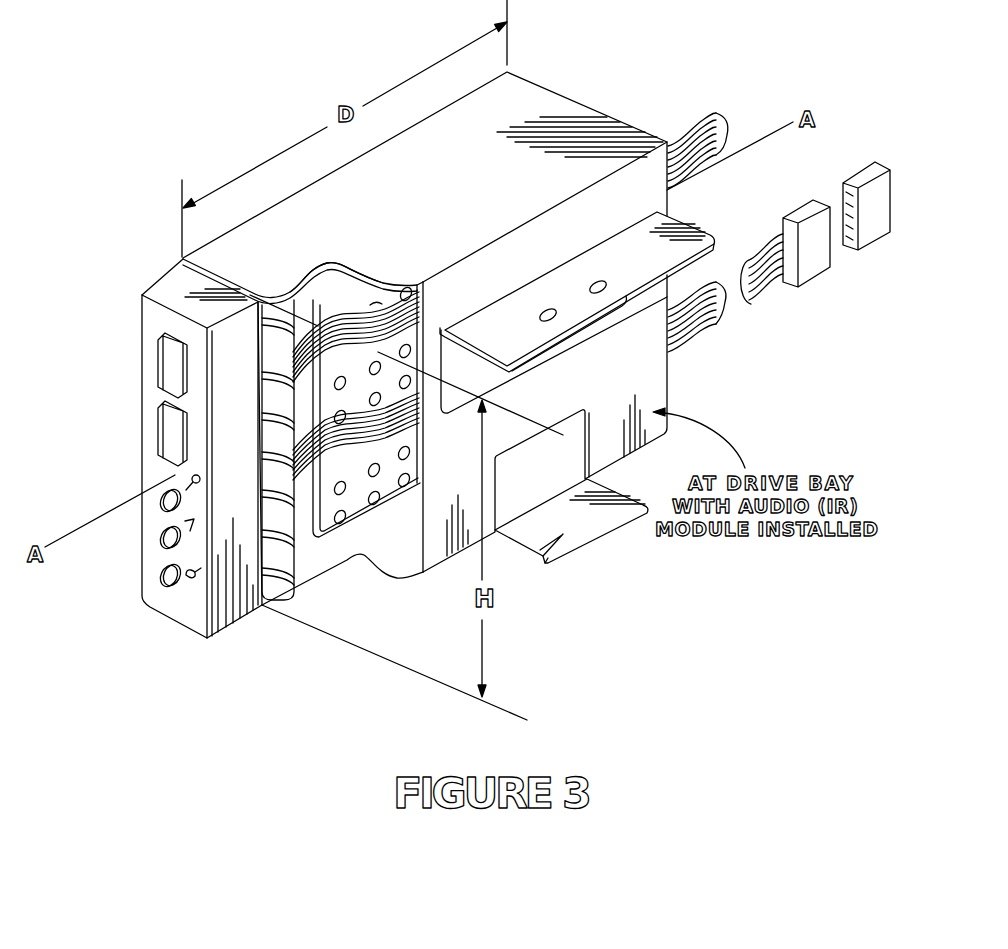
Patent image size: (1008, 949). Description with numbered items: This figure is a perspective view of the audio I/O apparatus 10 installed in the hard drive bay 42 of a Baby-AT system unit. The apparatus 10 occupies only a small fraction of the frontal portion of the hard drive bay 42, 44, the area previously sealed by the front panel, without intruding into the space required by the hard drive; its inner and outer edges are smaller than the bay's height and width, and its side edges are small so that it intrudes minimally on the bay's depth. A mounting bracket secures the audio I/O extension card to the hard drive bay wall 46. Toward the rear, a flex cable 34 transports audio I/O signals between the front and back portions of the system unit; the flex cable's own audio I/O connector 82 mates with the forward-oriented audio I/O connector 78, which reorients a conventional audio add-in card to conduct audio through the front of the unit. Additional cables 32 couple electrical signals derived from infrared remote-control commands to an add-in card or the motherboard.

The audio I/O apparatus 10 is at (135, 450).
The additional cables 32 is at (697, 114).
The flex cable 34 is at (707, 333).
The hard drive bay 42 is at (547, 105).
The hard drive bay 44 is at (317, 330).
The hard drive bay wall 46 is at (403, 547).
The audio I/O connector 78 is at (868, 250).
The audio I/O connector 82 is at (808, 287).